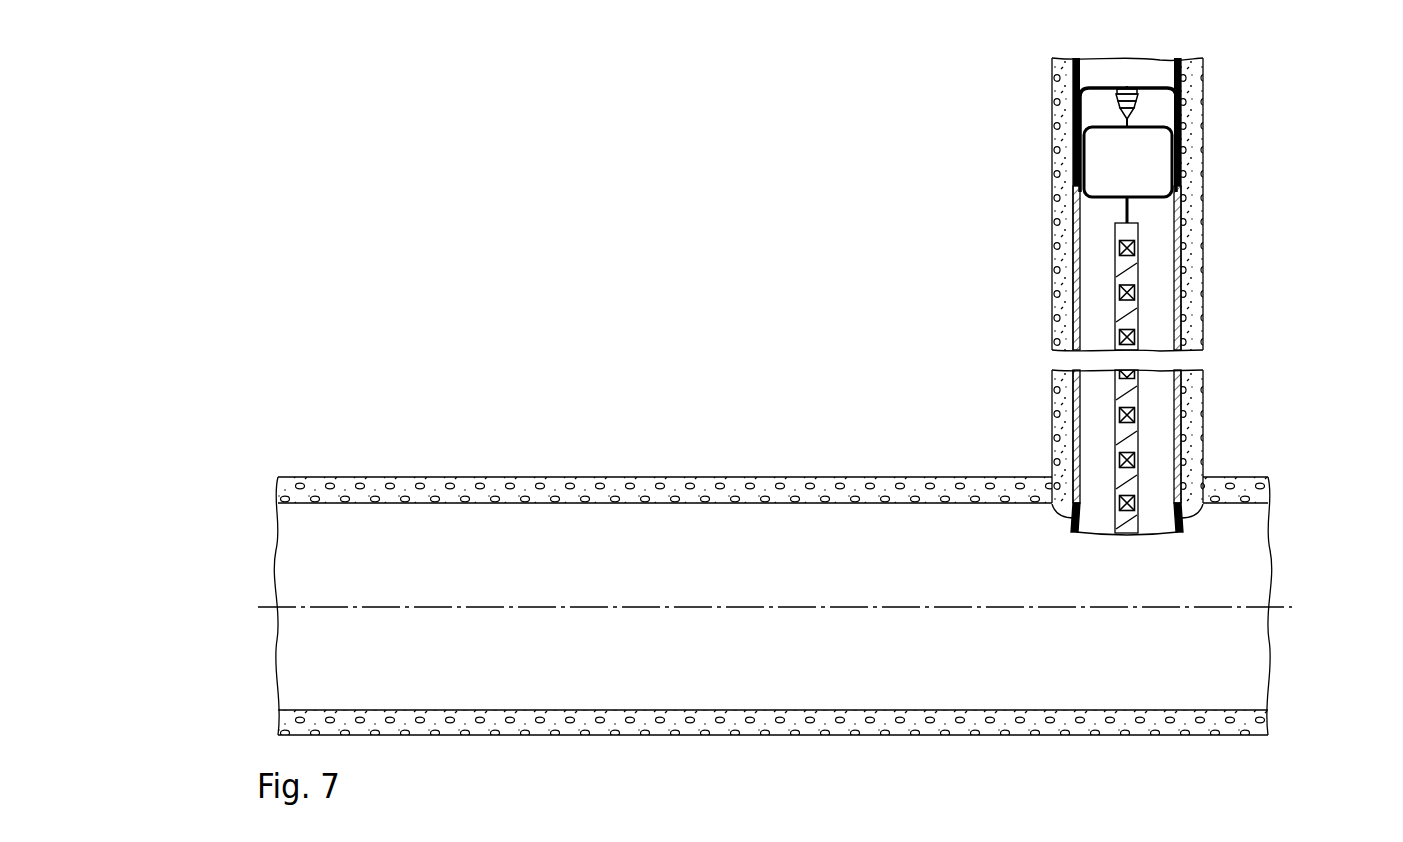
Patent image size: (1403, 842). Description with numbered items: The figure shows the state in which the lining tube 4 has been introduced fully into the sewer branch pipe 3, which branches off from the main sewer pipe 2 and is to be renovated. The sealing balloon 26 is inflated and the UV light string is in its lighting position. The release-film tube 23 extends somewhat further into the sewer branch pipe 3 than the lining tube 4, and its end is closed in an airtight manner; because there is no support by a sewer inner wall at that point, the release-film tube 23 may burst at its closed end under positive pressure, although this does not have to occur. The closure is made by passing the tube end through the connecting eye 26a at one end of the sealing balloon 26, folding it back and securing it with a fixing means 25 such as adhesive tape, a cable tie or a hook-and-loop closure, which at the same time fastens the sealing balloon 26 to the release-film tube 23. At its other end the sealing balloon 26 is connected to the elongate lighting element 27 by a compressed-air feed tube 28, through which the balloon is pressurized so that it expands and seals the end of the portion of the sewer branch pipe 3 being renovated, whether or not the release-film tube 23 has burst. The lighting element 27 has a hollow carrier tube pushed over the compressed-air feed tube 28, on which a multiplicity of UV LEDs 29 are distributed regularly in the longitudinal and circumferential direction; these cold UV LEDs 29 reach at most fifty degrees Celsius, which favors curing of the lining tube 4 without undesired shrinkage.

The main sewer pipe 2 is at (614, 490).
The sewer branch pipe 3 is at (1055, 403).
The lining tube 4 is at (1077, 284).
The release-film tube 23 is at (1079, 126).
The fixing means 25 is at (1115, 96).
The sealing balloon 26 is at (1165, 160).
The connecting eye 26a is at (1134, 108).
The lighting element 27 is at (1116, 316).
The compressed-air feed tube 28 is at (1136, 209).
The UV LEDs 29 is at (1142, 337).